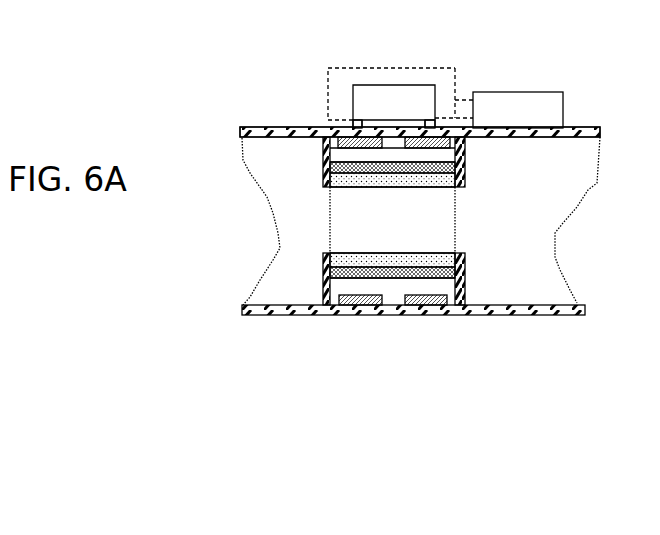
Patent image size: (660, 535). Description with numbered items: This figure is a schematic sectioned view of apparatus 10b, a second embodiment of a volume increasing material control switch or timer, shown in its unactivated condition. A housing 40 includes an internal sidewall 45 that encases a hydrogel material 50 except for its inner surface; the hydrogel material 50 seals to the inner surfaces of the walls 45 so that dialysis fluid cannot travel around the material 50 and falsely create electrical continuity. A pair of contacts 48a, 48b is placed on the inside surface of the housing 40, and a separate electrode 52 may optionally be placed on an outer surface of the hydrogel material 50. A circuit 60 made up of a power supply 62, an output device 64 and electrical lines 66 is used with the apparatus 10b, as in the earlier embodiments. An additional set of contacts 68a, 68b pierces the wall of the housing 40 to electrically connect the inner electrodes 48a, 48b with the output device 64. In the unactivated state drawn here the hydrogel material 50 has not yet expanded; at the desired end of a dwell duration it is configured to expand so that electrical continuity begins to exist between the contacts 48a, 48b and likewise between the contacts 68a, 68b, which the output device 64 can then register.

The apparatus 10b is at (578, 316).
The housing 40 is at (270, 127).
The internal sidewall 45 is at (323, 178).
The contact 48a is at (349, 142).
The contact 48b is at (428, 139).
The hydrogel material 50 is at (422, 255).
The electrode 52 is at (377, 168).
The circuit 60 is at (326, 64).
The power supply 62 is at (520, 92).
The output device 64 is at (405, 116).
The electrical lines 66 is at (418, 68).
The contact 68a is at (333, 128).
The contact 68b is at (466, 131).